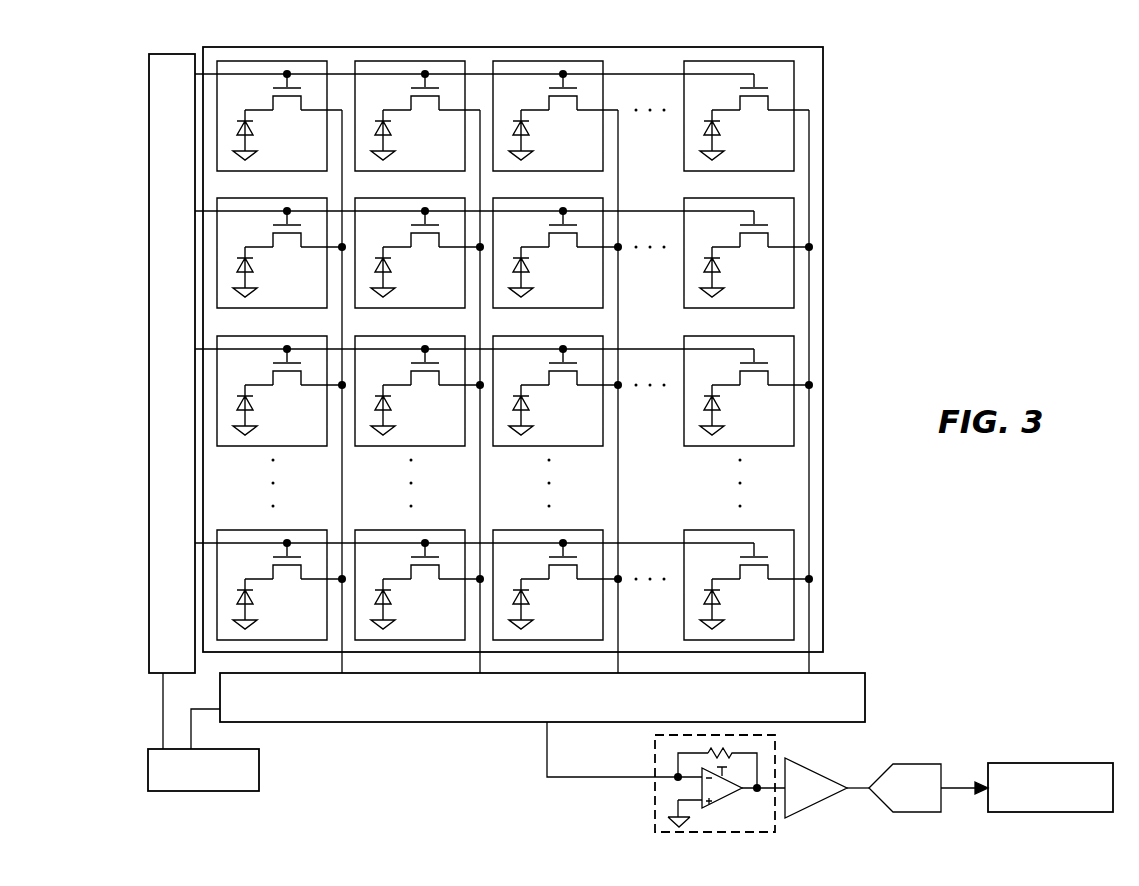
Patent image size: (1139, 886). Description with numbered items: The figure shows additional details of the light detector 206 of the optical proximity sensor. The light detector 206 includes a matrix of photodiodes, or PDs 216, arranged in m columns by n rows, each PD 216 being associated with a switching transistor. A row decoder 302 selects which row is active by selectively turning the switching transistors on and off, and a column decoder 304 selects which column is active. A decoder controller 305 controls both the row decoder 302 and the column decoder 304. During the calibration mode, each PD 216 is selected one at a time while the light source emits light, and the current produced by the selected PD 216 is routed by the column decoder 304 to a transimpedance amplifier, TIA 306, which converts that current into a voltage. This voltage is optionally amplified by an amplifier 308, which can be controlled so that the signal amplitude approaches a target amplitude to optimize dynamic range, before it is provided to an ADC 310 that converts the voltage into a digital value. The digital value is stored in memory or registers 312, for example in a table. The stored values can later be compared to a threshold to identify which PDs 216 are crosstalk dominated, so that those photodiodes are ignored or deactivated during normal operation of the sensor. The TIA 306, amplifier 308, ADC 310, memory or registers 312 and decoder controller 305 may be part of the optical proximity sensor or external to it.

The row decoder 302 is at (175, 54).
The light detector 206 is at (823, 105).
The photodiode (PD) 216 is at (322, 154).
The column decoder 304 is at (843, 673).
The decoder controller 305 is at (260, 768).
The transimpedance amplifier (TIA) 306 is at (770, 828).
The amplifier 308 is at (817, 767).
The ADC 310 is at (919, 764).
The memory or registers 312 is at (1048, 763).